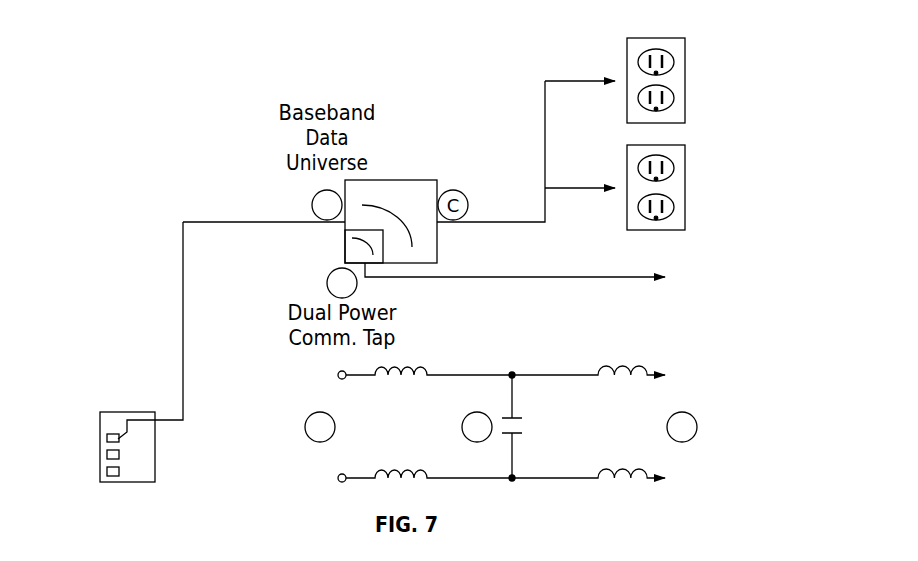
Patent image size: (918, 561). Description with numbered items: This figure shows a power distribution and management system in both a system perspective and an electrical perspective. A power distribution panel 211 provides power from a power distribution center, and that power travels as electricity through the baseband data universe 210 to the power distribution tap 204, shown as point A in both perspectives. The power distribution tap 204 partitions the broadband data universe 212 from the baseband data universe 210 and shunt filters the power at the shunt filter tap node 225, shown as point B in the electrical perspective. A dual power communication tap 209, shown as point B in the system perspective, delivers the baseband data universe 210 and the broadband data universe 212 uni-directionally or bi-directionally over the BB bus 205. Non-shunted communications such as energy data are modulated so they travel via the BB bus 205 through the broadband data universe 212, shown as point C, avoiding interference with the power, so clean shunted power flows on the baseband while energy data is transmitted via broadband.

The power distribution tap 204 is at (325, 442).
The BB bus 205 is at (534, 109).
The dual power communication tap 209 is at (328, 282).
The baseband data universe 210 is at (313, 205).
The power distribution panel 211 is at (113, 411).
The broadband data universe 212 is at (657, 37).
The shunt filter tap node 225 is at (477, 442).